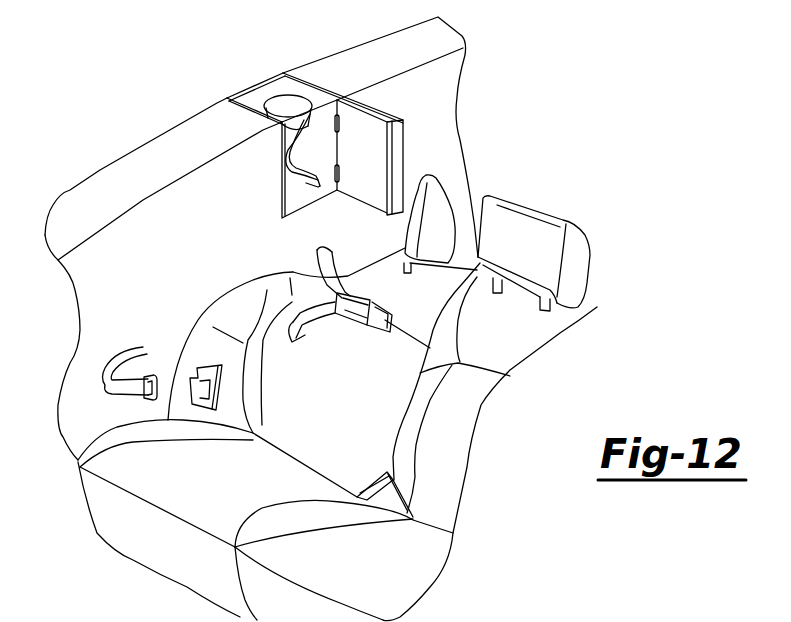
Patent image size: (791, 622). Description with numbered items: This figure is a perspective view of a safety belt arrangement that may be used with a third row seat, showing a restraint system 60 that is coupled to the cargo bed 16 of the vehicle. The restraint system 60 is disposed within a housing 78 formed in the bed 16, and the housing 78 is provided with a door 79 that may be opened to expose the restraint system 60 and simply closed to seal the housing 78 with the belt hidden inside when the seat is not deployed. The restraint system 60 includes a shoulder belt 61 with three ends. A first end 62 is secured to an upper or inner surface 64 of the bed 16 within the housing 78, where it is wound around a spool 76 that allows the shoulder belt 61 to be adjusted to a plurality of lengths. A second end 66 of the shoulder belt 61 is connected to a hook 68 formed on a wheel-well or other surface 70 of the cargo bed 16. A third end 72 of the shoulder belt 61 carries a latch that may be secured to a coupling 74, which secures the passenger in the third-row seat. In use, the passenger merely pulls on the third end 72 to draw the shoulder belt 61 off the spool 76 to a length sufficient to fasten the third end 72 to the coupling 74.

The bed 16 is at (205, 223).
The restraint system 60 is at (147, 104).
The shoulder belt 61 is at (318, 270).
The first end 62 is at (286, 178).
The upper or inner surface 64 is at (213, 118).
The second end 66 is at (130, 393).
The hook 68 is at (192, 380).
The wheel-well or other surface 70 is at (207, 330).
The third end 72 is at (367, 302).
The coupling 74 is at (352, 496).
The spool 76 is at (288, 100).
The housing 78 is at (327, 108).
The door 79 is at (374, 141).